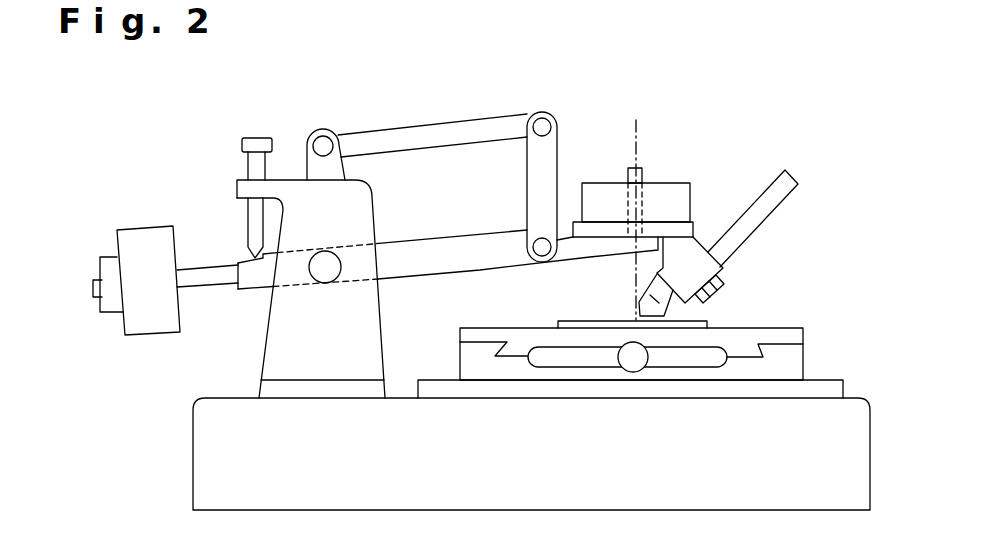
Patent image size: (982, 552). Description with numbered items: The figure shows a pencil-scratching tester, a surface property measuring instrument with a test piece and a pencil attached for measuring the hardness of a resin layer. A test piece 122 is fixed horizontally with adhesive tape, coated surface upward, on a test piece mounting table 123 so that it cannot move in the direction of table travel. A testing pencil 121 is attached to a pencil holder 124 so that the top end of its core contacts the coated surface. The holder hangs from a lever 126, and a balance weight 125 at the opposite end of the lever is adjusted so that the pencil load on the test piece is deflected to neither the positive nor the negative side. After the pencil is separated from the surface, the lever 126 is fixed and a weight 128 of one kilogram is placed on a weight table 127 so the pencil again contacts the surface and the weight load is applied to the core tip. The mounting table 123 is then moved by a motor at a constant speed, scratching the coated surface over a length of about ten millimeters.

The testing pencil 121 is at (777, 200).
The test piece 122 is at (708, 322).
The test piece mounting table 123 is at (517, 338).
The pencil holder 124 is at (723, 272).
The balance weight 125 is at (152, 240).
The lever 126 is at (450, 253).
The weight table 127 is at (695, 228).
The weight 128 is at (673, 188).